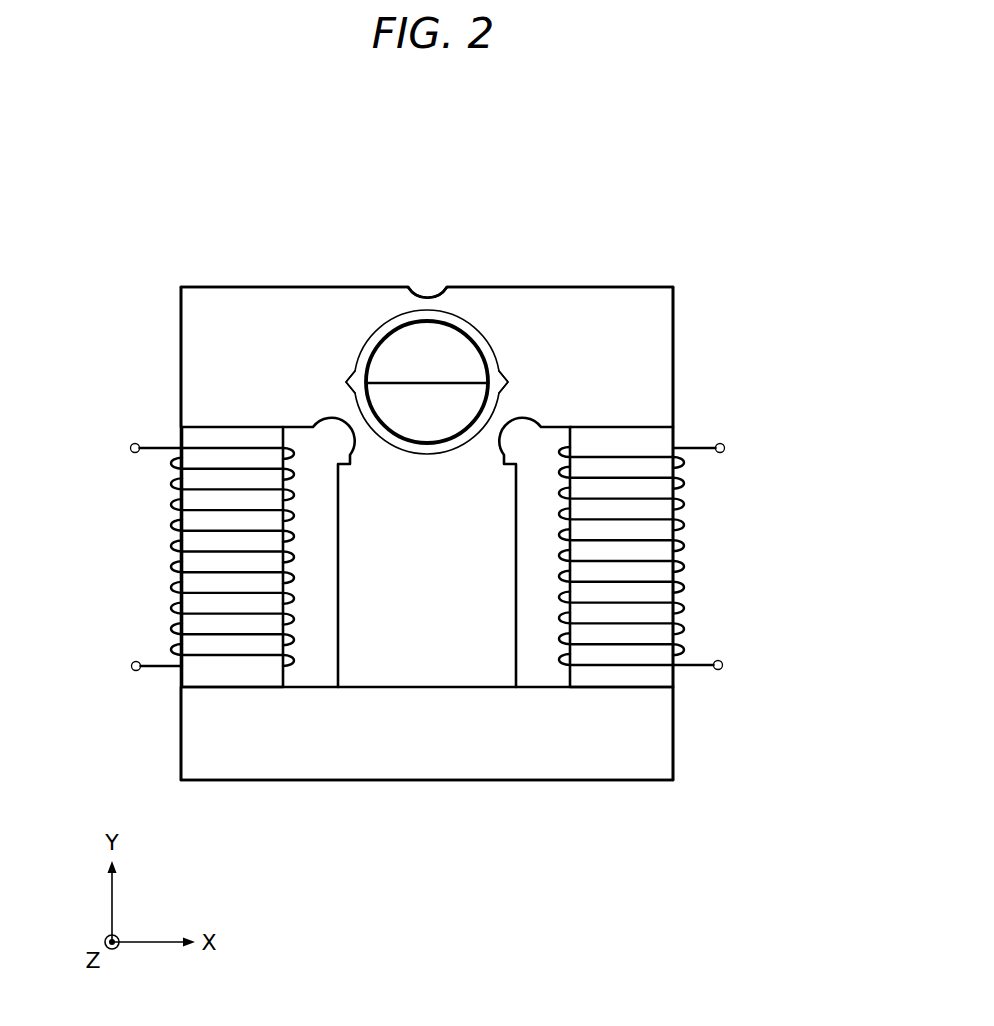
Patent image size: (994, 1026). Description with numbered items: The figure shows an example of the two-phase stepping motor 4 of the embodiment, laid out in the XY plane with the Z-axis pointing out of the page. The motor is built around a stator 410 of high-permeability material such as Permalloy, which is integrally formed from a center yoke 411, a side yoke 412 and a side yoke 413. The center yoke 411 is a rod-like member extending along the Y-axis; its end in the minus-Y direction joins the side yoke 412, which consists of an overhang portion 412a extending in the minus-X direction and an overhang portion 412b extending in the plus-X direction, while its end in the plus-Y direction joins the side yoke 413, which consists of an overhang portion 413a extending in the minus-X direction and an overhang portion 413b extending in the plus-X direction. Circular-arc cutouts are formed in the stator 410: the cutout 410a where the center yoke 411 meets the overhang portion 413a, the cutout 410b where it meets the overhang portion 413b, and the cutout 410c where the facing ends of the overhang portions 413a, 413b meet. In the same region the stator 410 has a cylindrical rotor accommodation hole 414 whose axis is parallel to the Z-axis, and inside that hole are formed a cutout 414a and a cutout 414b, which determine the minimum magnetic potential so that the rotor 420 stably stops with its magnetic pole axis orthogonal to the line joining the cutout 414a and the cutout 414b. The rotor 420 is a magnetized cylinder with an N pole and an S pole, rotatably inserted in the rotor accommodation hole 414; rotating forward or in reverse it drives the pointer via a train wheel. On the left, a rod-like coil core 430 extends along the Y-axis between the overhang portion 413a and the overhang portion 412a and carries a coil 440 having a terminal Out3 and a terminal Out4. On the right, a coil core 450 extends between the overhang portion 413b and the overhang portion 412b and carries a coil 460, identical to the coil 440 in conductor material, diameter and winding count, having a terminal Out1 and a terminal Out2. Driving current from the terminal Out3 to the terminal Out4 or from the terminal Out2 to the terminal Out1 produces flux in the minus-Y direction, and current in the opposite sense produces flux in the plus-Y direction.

The two-phase stepping motor 4 is at (657, 177).
The stator 410 is at (635, 287).
The cutout 410a is at (352, 437).
The cutout 410b is at (505, 437).
The cutout 410c is at (427, 296).
The center yoke 411 is at (470, 603).
The side yoke 412 is at (612, 838).
The overhang portion 412a is at (292, 748).
The overhang portion 412b is at (572, 748).
The side yoke 413 is at (620, 148).
The overhang portion 413a is at (277, 313).
The overhang portion 413b is at (590, 313).
The rotor accommodation hole 414 is at (388, 324).
The cutout 414a is at (355, 381).
The cutout 414b is at (504, 381).
The rotor 420 is at (458, 333).
The coil core 430 is at (180, 675).
The coil 440 is at (168, 504).
The coil core 450 is at (622, 680).
The coil 460 is at (682, 522).
The terminal Out1 is at (723, 445).
The terminal Out2 is at (722, 669).
The terminal Out3 is at (132, 669).
The terminal Out4 is at (132, 445).